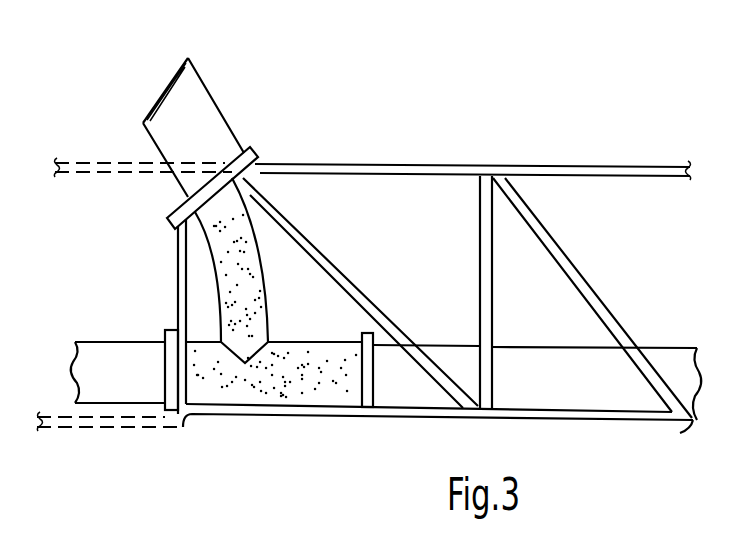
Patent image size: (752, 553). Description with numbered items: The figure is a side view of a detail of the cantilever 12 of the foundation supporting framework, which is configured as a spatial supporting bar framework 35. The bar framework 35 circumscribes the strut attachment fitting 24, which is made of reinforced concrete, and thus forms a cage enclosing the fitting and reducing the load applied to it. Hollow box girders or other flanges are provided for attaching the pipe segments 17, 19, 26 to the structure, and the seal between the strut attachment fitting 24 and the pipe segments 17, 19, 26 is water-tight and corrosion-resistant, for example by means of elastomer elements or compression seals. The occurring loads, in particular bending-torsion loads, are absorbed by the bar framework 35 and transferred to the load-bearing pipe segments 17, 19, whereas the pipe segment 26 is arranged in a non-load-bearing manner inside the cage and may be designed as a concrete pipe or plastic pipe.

The cantilever 12 is at (526, 118).
The pipe segment 17 is at (207, 132).
The pipe segment 19 is at (118, 380).
The strut attachment fitting 24 is at (327, 128).
The pipe segment 26 is at (527, 368).
The bar framework 35 is at (397, 170).